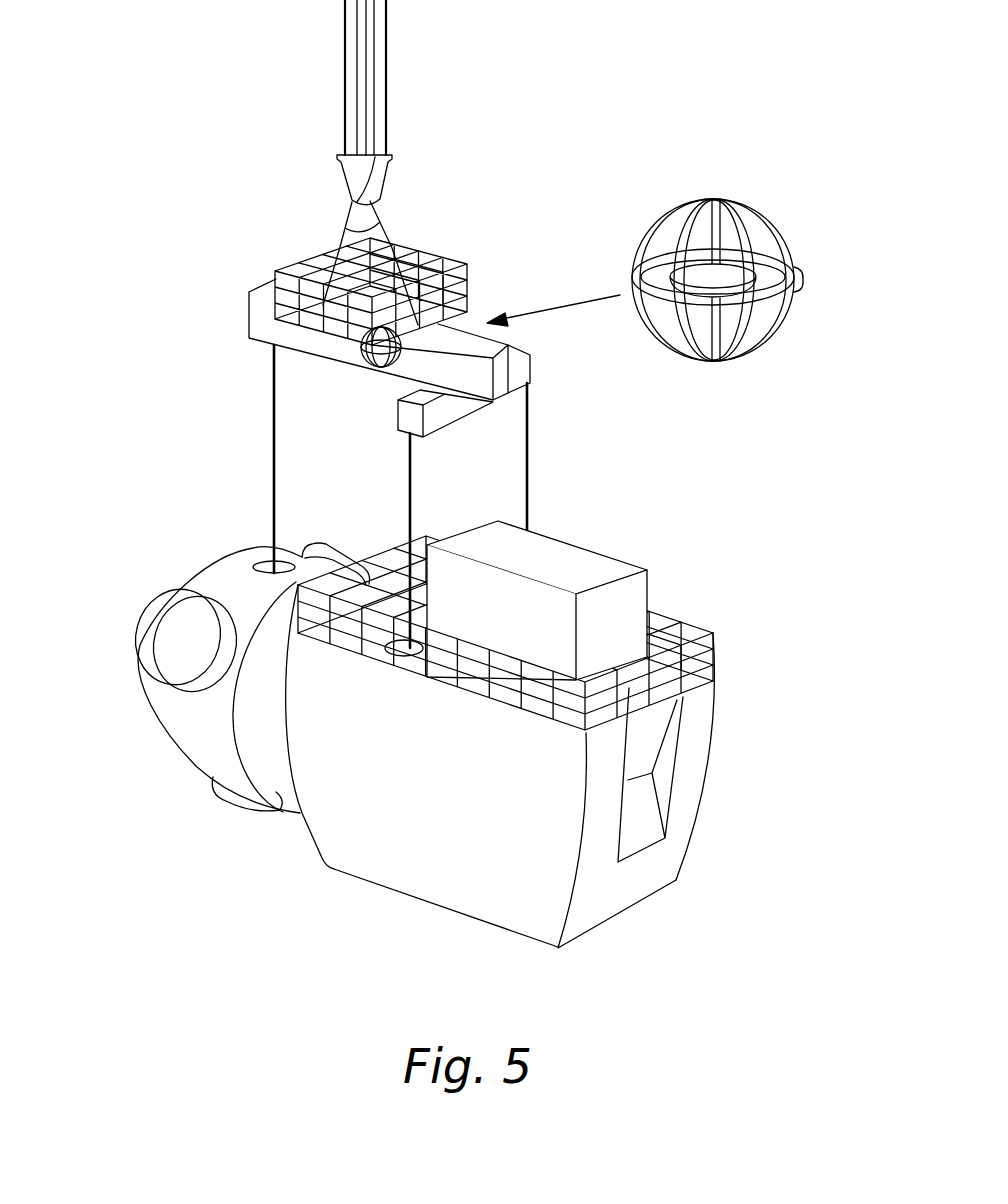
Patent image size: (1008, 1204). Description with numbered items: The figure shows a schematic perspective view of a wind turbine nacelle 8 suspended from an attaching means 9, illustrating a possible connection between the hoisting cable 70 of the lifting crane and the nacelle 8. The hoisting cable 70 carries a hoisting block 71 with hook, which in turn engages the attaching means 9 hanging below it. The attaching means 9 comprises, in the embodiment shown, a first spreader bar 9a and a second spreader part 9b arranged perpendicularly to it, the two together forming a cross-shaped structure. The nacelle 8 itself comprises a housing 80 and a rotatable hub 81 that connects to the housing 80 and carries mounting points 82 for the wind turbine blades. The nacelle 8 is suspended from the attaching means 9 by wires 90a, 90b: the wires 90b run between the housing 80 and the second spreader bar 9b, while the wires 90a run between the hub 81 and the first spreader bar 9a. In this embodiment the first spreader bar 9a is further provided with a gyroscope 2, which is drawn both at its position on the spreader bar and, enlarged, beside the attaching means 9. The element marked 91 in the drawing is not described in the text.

The gyroscope 2 is at (824, 227).
The nacelle 8 is at (374, 915).
The attaching means 9 is at (219, 282).
The first spreader bar 9a is at (260, 318).
The second spreader part 9b is at (400, 423).
The hoisting cable 70 is at (353, 35).
The hoisting block 71 is at (353, 173).
The housing 80 is at (508, 880).
The rotatable hub 81 is at (187, 728).
The mounting points 82 is at (170, 633).
The wires 90a is at (273, 437).
The wires 90b is at (527, 505).
The cone 91 is at (397, 247).